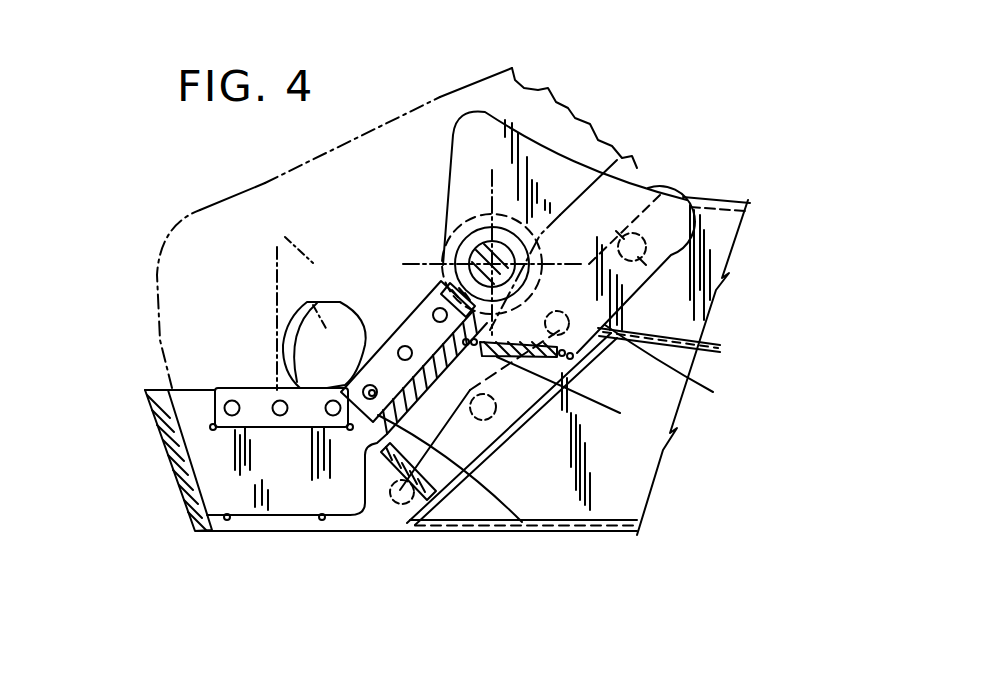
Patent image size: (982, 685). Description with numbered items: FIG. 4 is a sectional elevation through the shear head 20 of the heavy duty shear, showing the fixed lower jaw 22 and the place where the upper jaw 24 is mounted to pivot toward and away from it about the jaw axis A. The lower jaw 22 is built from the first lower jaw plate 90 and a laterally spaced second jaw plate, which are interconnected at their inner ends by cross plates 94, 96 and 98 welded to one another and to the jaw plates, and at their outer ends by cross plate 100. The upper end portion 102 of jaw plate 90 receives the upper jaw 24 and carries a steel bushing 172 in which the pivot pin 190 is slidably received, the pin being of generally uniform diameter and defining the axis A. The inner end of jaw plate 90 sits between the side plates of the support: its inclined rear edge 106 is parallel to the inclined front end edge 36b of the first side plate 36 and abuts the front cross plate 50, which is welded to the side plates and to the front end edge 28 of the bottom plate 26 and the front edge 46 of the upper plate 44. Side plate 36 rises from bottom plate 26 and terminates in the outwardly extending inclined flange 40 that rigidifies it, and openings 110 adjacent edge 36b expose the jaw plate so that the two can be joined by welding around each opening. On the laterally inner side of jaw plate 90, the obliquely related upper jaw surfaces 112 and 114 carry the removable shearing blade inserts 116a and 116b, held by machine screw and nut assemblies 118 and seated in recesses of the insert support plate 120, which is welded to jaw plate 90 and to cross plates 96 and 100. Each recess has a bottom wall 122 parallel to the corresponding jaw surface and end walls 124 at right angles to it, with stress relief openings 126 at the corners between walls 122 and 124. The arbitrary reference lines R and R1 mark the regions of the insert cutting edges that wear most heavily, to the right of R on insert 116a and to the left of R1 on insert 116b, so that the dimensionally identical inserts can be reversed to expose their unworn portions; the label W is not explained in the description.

The shear head 20 is at (430, 85).
The lower jaw 22 is at (190, 540).
The upper jaw 24 is at (165, 240).
The bottom plate 26 is at (643, 523).
The front end edge 28 is at (410, 522).
The first side plate 36 is at (697, 324).
The inclined front end edge 36b is at (605, 229).
The inclined flange 40 is at (730, 196).
The upper plate 44 is at (650, 333).
The front edge 46 is at (713, 392).
The front cross plate 50 is at (547, 522).
The first lower jaw plate 90 is at (362, 530).
The cross plate 94 is at (565, 346).
The cross plate 96 is at (512, 431).
The cross plate 98 is at (462, 522).
The cross plate 100 is at (170, 458).
The upper end portion 102 is at (535, 135).
The inclined rear edge 106 is at (640, 285).
The openings 110 is at (640, 198).
The jaw surface 112 is at (180, 388).
The jaw surface 114 is at (388, 315).
The shearing blade insert 116a is at (283, 390).
The shearing blade insert 116b is at (425, 402).
The machine screw and nut assemblies 118 is at (226, 409).
The insert support plate 120 is at (227, 493).
The bottom wall 122 is at (413, 320).
The end walls 124 is at (427, 275).
The stress relief openings 126 is at (213, 427).
The steel bushing 172 is at (583, 202).
The pivot pin 190 is at (470, 240).
The reference line R is at (275, 258).
The reference line R1 is at (281, 228).
The wheel axis W is at (290, 318).
The jaw axis A is at (530, 240).